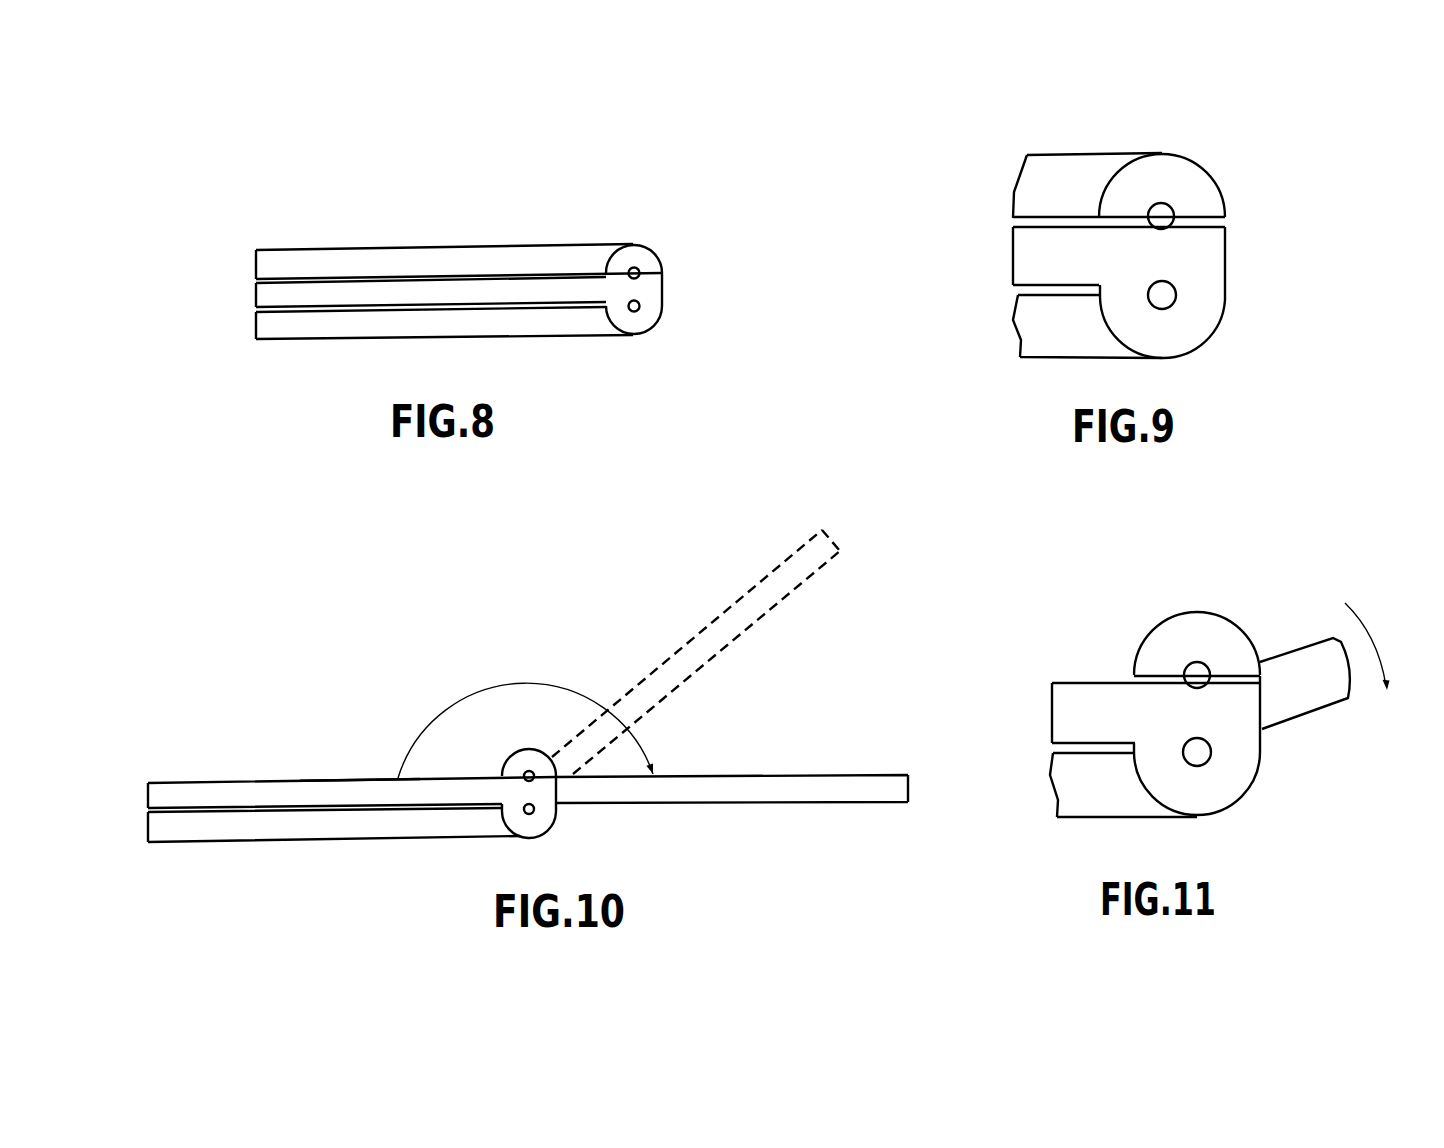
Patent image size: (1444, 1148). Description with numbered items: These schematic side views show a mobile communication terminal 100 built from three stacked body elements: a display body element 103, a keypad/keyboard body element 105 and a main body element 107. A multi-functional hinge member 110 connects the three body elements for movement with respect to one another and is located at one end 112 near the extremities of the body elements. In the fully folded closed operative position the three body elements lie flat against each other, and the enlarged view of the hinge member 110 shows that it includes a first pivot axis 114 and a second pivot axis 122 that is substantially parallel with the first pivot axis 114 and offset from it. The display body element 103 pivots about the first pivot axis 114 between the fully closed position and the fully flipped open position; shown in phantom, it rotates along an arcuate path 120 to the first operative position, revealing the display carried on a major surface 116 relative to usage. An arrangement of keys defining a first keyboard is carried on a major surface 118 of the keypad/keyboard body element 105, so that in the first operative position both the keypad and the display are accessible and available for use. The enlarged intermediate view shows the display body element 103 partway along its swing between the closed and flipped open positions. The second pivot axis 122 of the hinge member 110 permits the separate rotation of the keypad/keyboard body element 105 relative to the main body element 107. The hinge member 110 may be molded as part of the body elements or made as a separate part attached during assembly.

In FIG. 8, the mobile communication terminal 100 is at (467, 136).
In FIG. 8, the display body element 103 is at (257, 259).
In FIG. 10, the display body element 103 is at (893, 793).
In FIG. 11, the display body element 103 is at (1312, 693).
In FIG. 8, the keypad/keyboard body element 105 is at (256, 293).
In FIG. 10, the keypad/keyboard body element 105 is at (265, 790).
In FIG. 11, the keypad/keyboard body element 105 is at (1072, 698).
In FIG. 8, the main body element 107 is at (300, 333).
In FIG. 10, the main body element 107 is at (267, 835).
In FIG. 11, the main body element 107 is at (1083, 803).
In FIG. 8, the multi-functional hinge member 110 is at (650, 196).
In FIG. 9, the multi-functional hinge member 110 is at (1235, 103).
In FIG. 8, the end 112 is at (675, 332).
In FIG. 9, the first pivot axis 114 is at (1168, 212).
In FIG. 10, the first pivot axis 114 is at (524, 772).
In FIG. 11, the first pivot axis 114 is at (1190, 667).
In FIG. 10, the major surface 116 is at (675, 652).
In FIG. 10, the major surface 118 is at (360, 778).
In FIG. 10, the arcuate path 120 is at (517, 685).
In FIG. 11, the arcuate path 120 is at (1373, 633).
In FIG. 9, the second pivot axis 122 is at (1165, 298).
In FIG. 10, the second pivot axis 122 is at (533, 814).
In FIG. 11, the second pivot axis 122 is at (1200, 757).